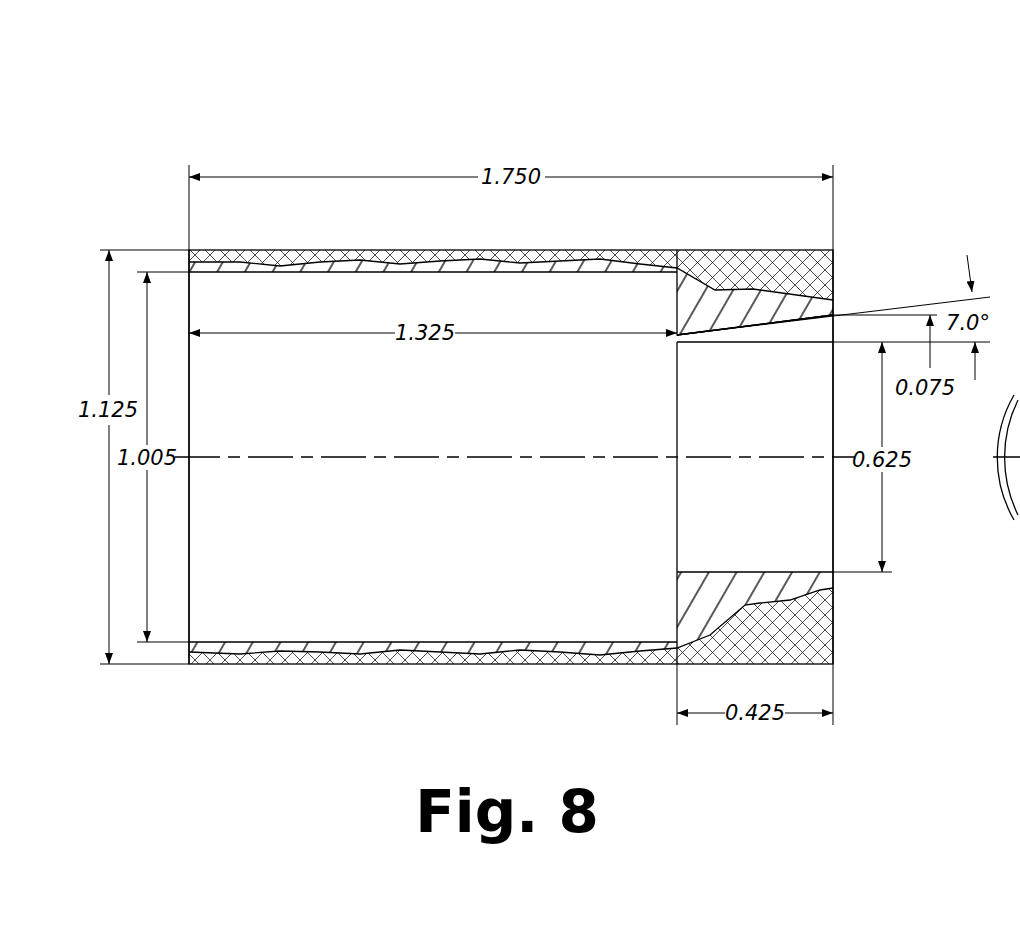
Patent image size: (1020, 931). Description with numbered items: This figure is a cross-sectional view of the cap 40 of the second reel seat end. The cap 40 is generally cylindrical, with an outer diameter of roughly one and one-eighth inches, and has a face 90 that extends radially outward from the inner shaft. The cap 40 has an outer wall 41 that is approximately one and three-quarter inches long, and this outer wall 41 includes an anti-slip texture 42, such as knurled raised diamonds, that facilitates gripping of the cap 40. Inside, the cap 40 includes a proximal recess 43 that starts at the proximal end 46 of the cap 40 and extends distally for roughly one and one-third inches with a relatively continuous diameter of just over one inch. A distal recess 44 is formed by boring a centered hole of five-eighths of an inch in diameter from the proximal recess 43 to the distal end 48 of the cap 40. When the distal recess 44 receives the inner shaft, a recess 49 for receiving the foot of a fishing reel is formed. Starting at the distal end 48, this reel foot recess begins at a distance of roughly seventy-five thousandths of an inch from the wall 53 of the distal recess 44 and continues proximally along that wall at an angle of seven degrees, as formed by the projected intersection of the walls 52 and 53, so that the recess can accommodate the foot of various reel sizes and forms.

The cap 40 is at (332, 107).
The outer wall 41 is at (662, 248).
The anti-slip texture 42 is at (740, 258).
The proximal recess 43 is at (180, 605).
The distal recess 44 is at (712, 525).
The proximal end 46 is at (205, 280).
The distal end 48 is at (862, 617).
The recess for receiving the foot of a fishing reel 49 is at (820, 330).
The wall 52 is at (765, 337).
The wall of the distal recess 53 is at (708, 345).
The face 90 is at (838, 270).